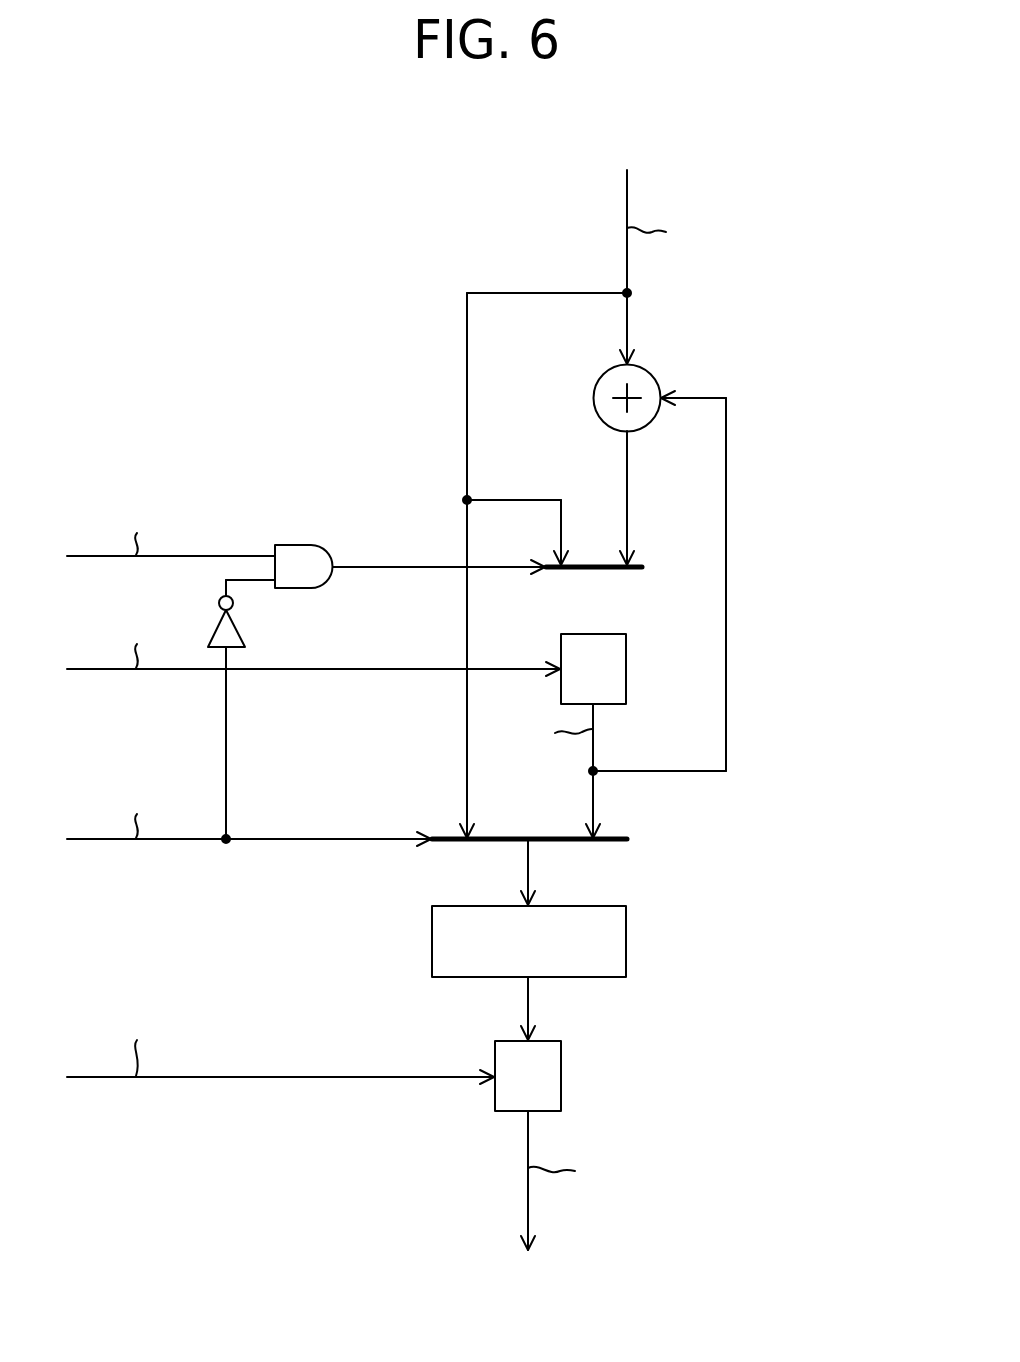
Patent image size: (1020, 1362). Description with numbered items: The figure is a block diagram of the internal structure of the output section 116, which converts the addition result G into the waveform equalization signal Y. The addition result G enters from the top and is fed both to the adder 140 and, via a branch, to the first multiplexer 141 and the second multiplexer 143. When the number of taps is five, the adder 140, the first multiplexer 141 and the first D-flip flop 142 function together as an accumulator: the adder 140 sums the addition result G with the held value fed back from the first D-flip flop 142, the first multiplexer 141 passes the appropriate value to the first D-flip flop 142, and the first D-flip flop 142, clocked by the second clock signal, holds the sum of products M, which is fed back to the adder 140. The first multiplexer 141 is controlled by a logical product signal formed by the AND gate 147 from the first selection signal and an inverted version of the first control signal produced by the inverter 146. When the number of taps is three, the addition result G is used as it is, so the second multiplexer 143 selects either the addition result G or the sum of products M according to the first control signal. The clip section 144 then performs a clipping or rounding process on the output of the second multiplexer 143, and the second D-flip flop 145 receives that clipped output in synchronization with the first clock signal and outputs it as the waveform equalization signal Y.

The output section 116 is at (327, 165).
The adder 140 is at (651, 372).
The first multiplexer 141 is at (642, 565).
The first D-flip flop 142 is at (626, 669).
The second multiplexer 143 is at (629, 839).
The clip section 144 is at (626, 938).
The second D-flip flop 145 is at (561, 1077).
The inverter 146 is at (239, 626).
The AND gate 147 is at (292, 544).